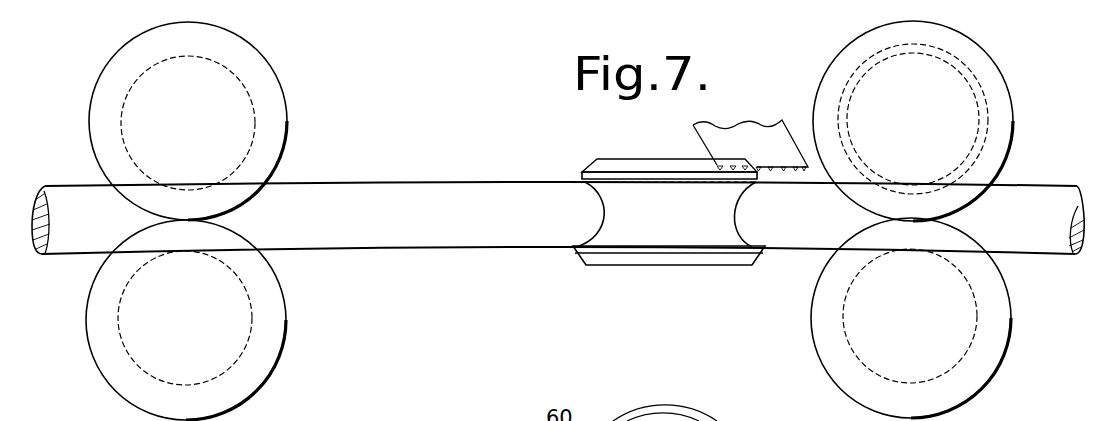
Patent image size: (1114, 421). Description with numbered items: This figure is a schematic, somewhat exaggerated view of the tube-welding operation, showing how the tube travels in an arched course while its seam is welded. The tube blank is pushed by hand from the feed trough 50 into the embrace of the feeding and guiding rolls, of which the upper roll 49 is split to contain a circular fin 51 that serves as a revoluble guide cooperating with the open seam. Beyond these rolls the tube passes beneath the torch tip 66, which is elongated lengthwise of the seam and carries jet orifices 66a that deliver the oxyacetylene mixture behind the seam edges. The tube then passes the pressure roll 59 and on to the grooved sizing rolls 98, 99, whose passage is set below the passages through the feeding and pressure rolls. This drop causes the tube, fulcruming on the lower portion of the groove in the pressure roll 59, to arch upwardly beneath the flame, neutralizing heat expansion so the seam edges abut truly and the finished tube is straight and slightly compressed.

The grooved sizing roll 99 is at (279, 107).
The grooved sizing roll 98 is at (277, 330).
The upper feeding and guiding roll 49 is at (1005, 83).
The circular fin 51 is at (987, 136).
The feed trough 50 is at (1004, 334).
The pressure roll 59 is at (633, 257).
The torch tip 66 is at (705, 136).
The jet orifices 66a is at (772, 172).